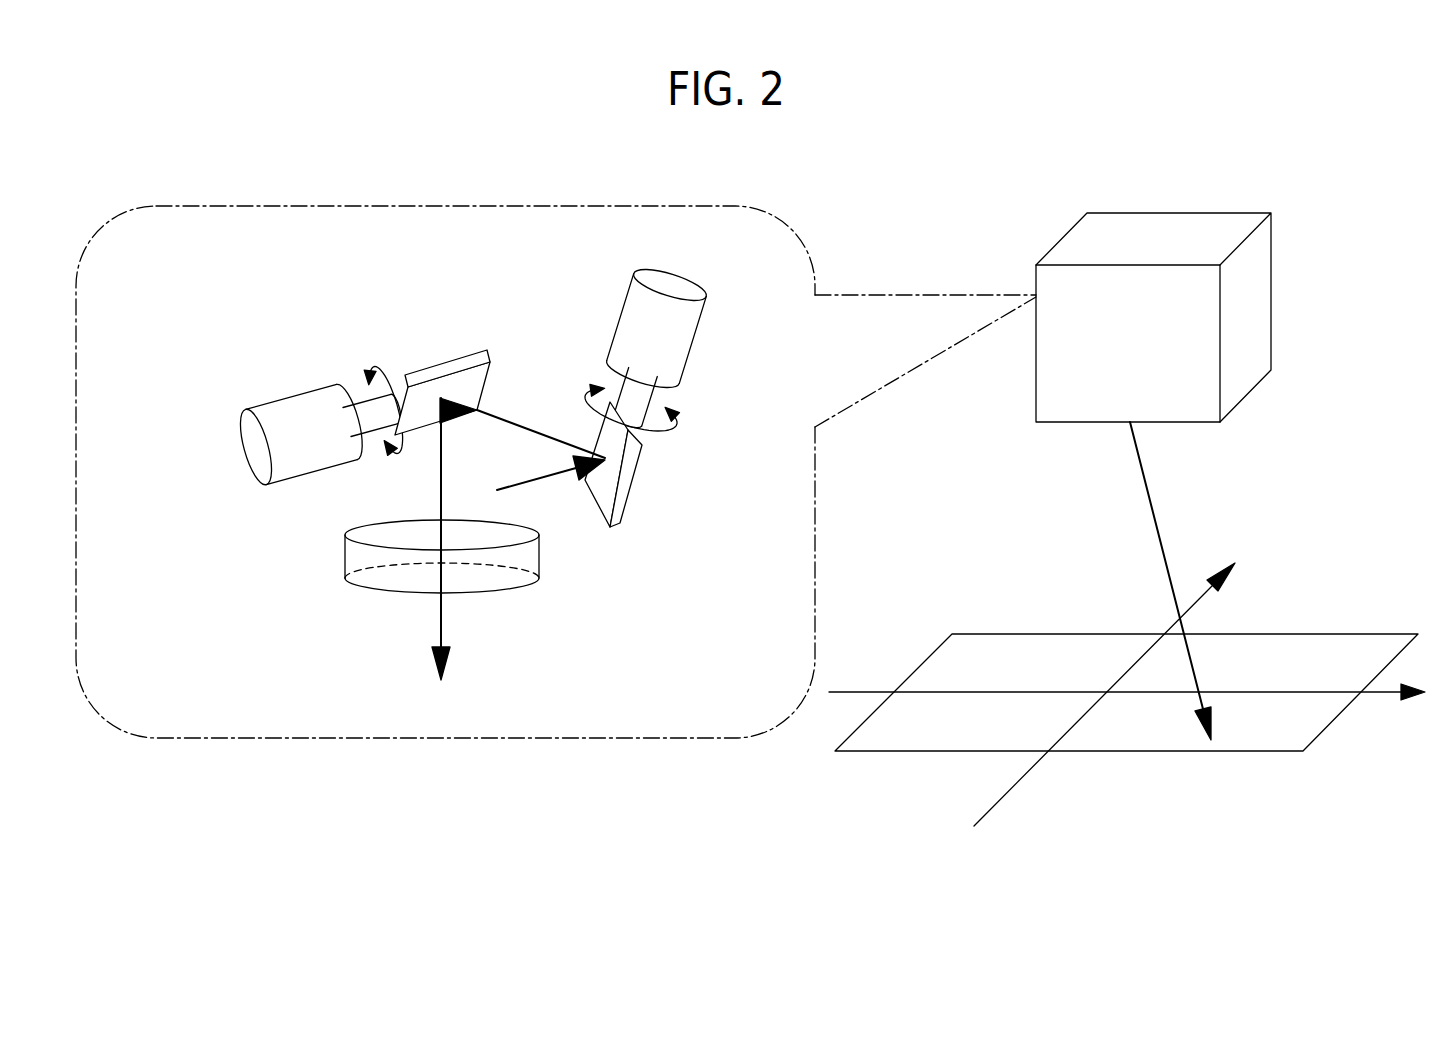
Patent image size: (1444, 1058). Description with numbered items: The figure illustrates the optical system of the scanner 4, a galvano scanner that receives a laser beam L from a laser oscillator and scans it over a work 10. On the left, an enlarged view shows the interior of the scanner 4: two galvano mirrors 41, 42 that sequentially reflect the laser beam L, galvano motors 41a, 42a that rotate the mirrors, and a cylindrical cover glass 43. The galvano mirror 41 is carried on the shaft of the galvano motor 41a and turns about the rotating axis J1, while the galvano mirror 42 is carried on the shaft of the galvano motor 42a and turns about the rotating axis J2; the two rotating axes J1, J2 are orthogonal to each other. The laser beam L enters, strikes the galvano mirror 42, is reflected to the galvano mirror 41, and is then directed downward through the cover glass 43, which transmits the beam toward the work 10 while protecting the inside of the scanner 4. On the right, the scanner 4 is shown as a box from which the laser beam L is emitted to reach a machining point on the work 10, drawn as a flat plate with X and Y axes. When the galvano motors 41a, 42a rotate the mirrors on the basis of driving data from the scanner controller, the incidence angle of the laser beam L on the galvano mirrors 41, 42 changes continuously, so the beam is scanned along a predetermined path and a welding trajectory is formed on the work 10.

The scanner 4 is at (1267, 295).
The work 10 is at (1344, 642).
The galvano mirror 41 is at (443, 368).
The galvano motor 41a is at (292, 400).
The galvano mirror 42 is at (635, 477).
The galvano motor 42a is at (700, 332).
The cover glass 43 is at (345, 557).
The rotating axis J1 is at (362, 398).
The rotating axis J2 is at (655, 392).
The laser beam L is at (443, 617).
The X axis X is at (1127, 712).
The Y axis Y is at (1123, 689).